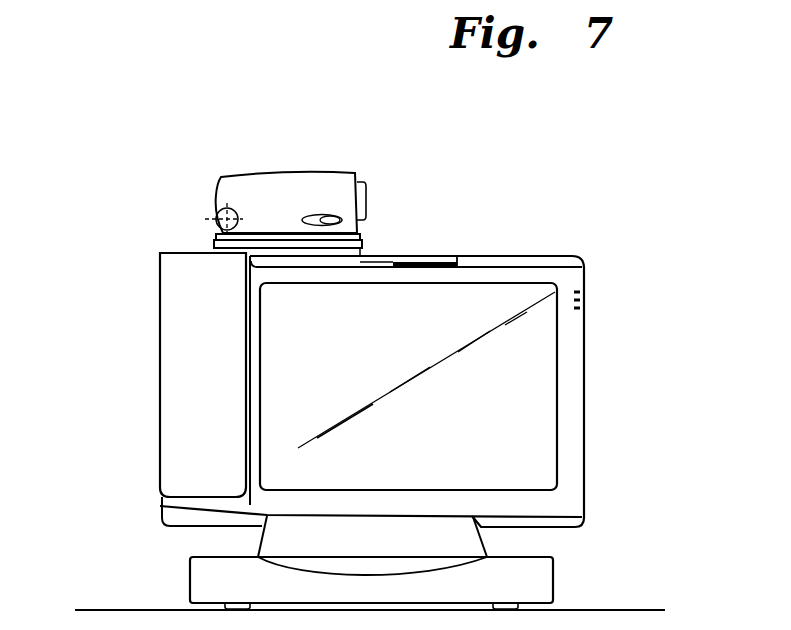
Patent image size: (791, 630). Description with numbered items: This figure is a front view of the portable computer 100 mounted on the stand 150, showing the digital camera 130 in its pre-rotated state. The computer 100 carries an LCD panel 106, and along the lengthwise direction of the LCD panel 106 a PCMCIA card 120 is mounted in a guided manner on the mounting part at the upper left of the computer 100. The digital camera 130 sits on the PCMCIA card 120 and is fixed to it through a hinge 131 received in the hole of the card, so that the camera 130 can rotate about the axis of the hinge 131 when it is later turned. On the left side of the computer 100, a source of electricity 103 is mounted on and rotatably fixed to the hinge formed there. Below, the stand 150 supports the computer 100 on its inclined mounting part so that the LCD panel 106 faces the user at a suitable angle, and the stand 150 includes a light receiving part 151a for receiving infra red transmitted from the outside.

The portable computer 100 is at (518, 238).
The source of electricity 103 is at (150, 330).
The LCD panel 106 is at (533, 398).
The PCMCIA card 120 is at (362, 240).
The digital camera 130 is at (296, 170).
The hinge 131 is at (227, 207).
The stand 150 is at (562, 576).
The light receiving part 151a is at (473, 545).